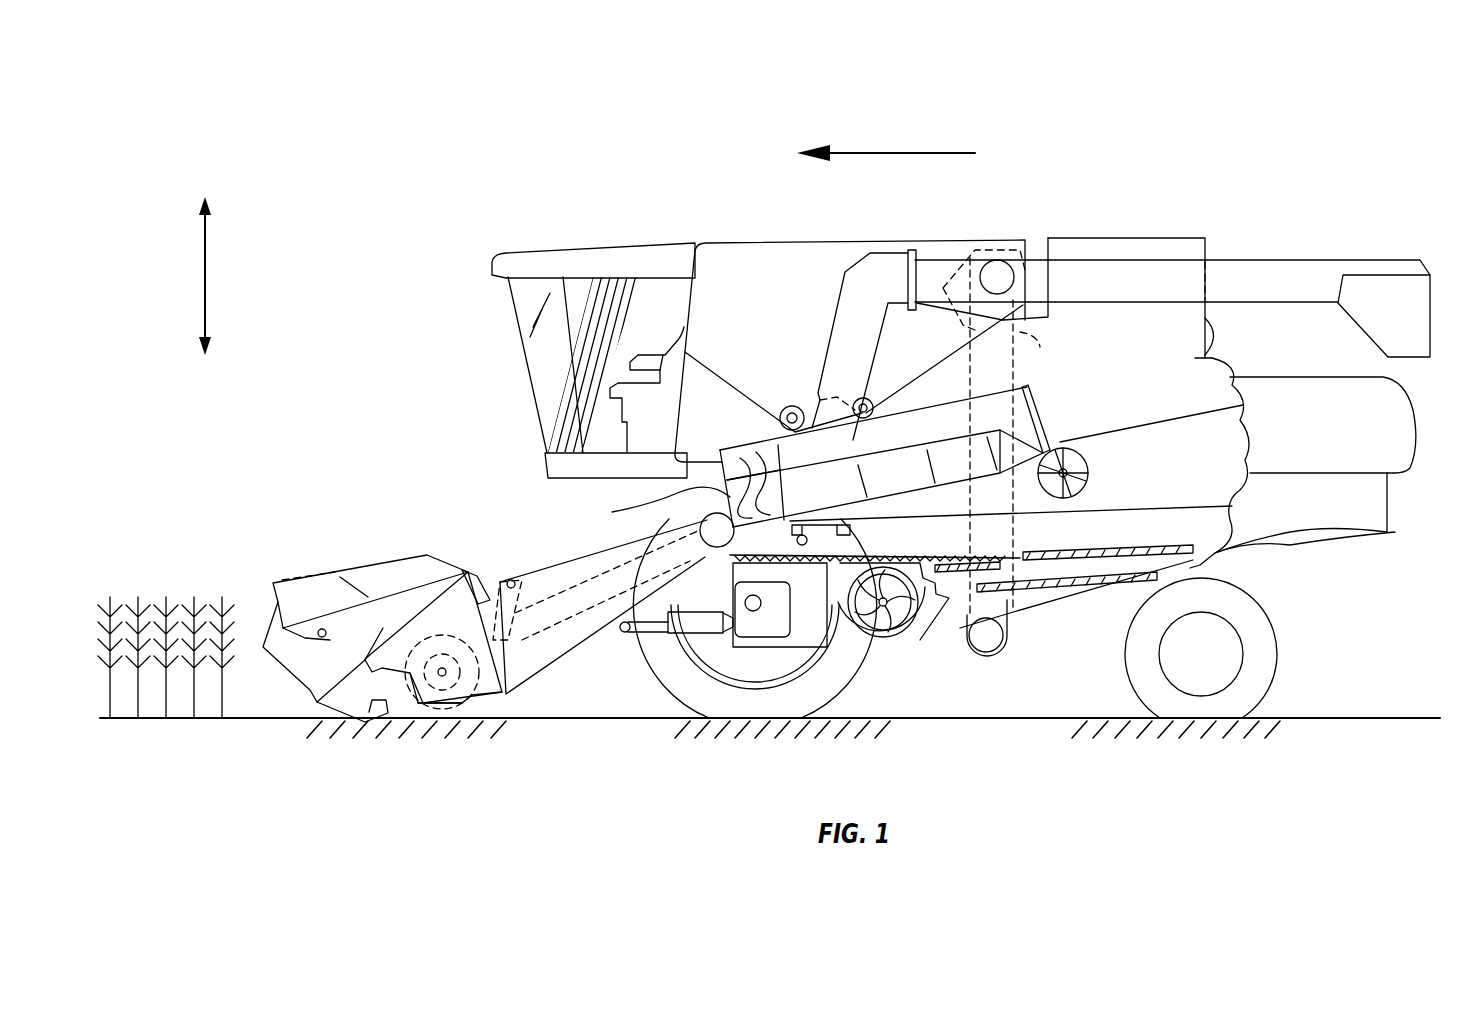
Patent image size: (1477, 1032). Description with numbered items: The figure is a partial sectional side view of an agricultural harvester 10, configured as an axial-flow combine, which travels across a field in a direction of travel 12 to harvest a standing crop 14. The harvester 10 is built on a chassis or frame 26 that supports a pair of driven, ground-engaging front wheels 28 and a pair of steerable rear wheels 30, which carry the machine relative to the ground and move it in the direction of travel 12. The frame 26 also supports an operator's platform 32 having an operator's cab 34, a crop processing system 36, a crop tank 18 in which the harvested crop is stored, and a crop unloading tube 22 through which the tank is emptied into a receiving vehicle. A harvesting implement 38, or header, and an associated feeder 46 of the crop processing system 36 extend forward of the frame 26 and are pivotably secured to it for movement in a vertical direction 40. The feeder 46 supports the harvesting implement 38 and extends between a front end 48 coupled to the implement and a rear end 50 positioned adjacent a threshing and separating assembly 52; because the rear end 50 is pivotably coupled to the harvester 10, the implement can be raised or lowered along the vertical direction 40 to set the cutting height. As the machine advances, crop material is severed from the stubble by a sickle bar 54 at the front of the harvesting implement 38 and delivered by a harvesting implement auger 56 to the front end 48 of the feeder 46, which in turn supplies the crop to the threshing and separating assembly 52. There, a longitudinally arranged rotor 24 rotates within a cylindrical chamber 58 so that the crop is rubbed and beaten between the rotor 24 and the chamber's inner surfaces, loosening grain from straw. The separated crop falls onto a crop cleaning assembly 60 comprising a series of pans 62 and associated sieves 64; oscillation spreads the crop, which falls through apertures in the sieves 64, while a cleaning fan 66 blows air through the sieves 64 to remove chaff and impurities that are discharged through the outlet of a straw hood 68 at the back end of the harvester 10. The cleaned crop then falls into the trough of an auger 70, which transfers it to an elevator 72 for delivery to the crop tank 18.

The agricultural harvester 10 is at (550, 198).
The direction of travel 12 is at (903, 150).
The standing crop 14 is at (183, 598).
The crop tank 18 is at (787, 240).
The crop unloading tube 22 is at (1268, 272).
The rotor 24 is at (750, 465).
The chassis or frame 26 is at (1223, 558).
The front wheels 28 is at (693, 687).
The rear wheels 30 is at (1273, 660).
The operator's platform 32 is at (545, 463).
The operator's cab 34 is at (535, 358).
The crop processing system 36 is at (1105, 503).
The harvesting implement 38 is at (320, 562).
The vertical direction 40 is at (205, 268).
The feeder 46 is at (531, 557).
The front end 48 is at (465, 623).
The rear end 50 is at (655, 514).
The threshing and separating assembly 52 is at (898, 451).
The sickle bar 54 is at (320, 720).
The harvesting implement auger 56 is at (450, 697).
The cylindrical chamber 58 is at (940, 412).
The crop cleaning assembly 60 is at (953, 645).
The pans 62 is at (873, 565).
The sieves 64 is at (1020, 557).
The cleaning fan 66 is at (887, 643).
The straw hood 68 is at (1408, 440).
The auger 70 is at (987, 642).
The elevator 72 is at (998, 432).